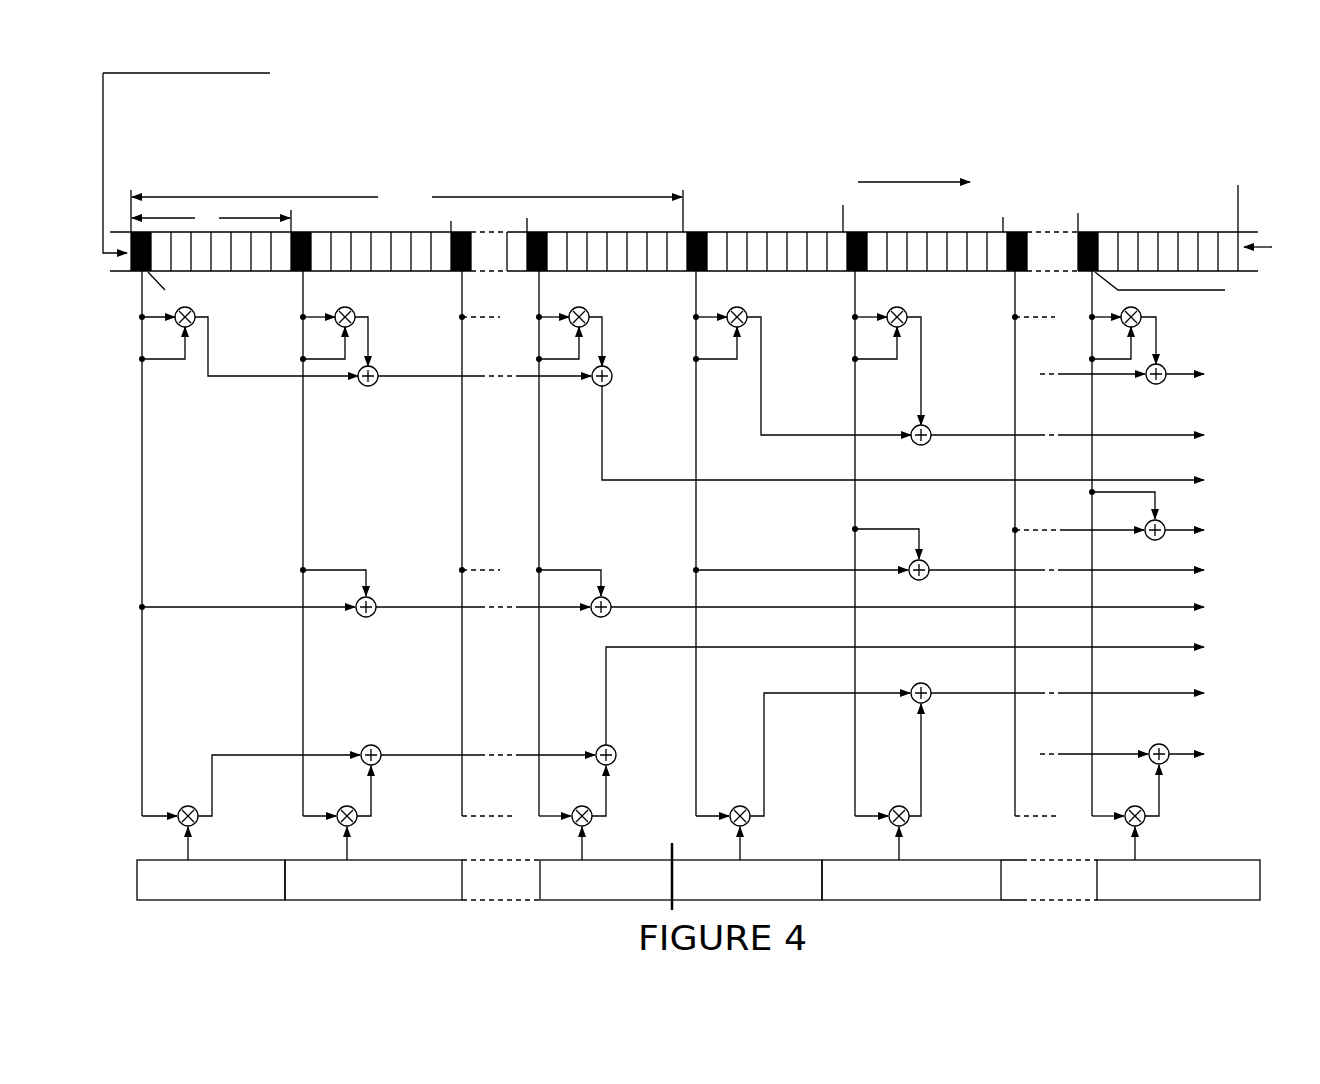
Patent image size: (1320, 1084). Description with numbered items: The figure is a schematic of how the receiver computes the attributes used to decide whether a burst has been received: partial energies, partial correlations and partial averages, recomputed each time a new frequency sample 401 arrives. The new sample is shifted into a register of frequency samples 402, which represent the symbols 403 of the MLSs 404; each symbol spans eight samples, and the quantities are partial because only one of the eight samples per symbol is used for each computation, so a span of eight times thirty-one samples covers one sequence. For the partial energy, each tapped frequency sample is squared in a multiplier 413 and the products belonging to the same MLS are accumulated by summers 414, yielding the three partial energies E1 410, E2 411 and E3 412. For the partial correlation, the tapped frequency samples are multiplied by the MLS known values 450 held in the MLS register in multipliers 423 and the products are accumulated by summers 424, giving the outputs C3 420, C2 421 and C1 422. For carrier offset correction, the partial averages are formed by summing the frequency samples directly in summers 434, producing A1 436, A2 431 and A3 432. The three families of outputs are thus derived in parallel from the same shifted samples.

The new frequency sample 401 is at (186, 150).
The frequency samples 402 is at (1220, 119).
The symbols 403 is at (289, 190).
The MLSs 404 is at (672, 153).
The partial energy E1 410 is at (1226, 373).
The partial energy E2 411 is at (1098, 435).
The partial energy E3 412 is at (944, 439).
The multiplier 413 is at (192, 306).
The summer 414 is at (360, 386).
The partial correlation C3 420 is at (946, 689).
The partial correlation C2 421 is at (1108, 694).
The partial correlation C1 422 is at (1227, 754).
The multiplier 423 is at (197, 823).
The summer 424 is at (379, 746).
The partial average A2 431 is at (1107, 570).
The partial average A3 432 is at (948, 605).
The summer 434 is at (377, 613).
The partial average A1 436 is at (1149, 516).
The MLS known values 450 is at (152, 903).